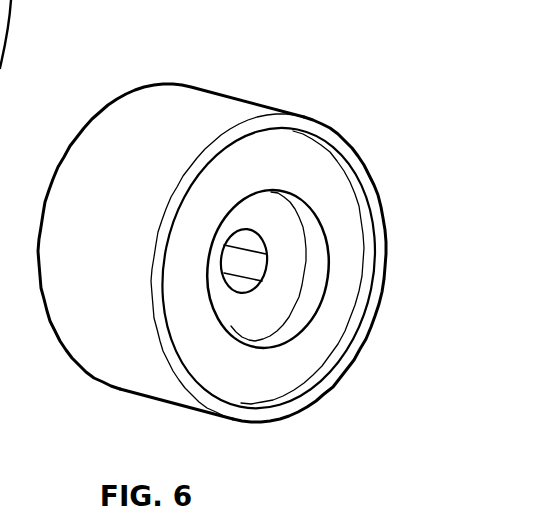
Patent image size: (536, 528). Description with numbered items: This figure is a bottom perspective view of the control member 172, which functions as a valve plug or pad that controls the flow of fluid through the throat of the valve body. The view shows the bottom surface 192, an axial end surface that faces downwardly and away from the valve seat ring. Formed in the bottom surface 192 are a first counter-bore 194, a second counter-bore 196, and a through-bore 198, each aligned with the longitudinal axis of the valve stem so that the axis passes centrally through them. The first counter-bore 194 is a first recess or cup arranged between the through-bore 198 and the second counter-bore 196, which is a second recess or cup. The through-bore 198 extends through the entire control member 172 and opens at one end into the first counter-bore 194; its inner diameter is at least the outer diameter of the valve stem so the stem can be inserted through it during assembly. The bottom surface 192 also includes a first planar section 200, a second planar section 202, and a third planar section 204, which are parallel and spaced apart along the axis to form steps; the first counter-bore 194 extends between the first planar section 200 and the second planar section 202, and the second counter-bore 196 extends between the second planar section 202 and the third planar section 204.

The control member 172 is at (370, 111).
The bottom surface 192 is at (314, 421).
The first counter-bore 194 is at (315, 270).
The second counter-bore 196 is at (360, 317).
The through-bore 198 is at (242, 238).
The first planar section 200 is at (250, 315).
The second planar section 202 is at (317, 338).
The third planar section 204 is at (384, 213).